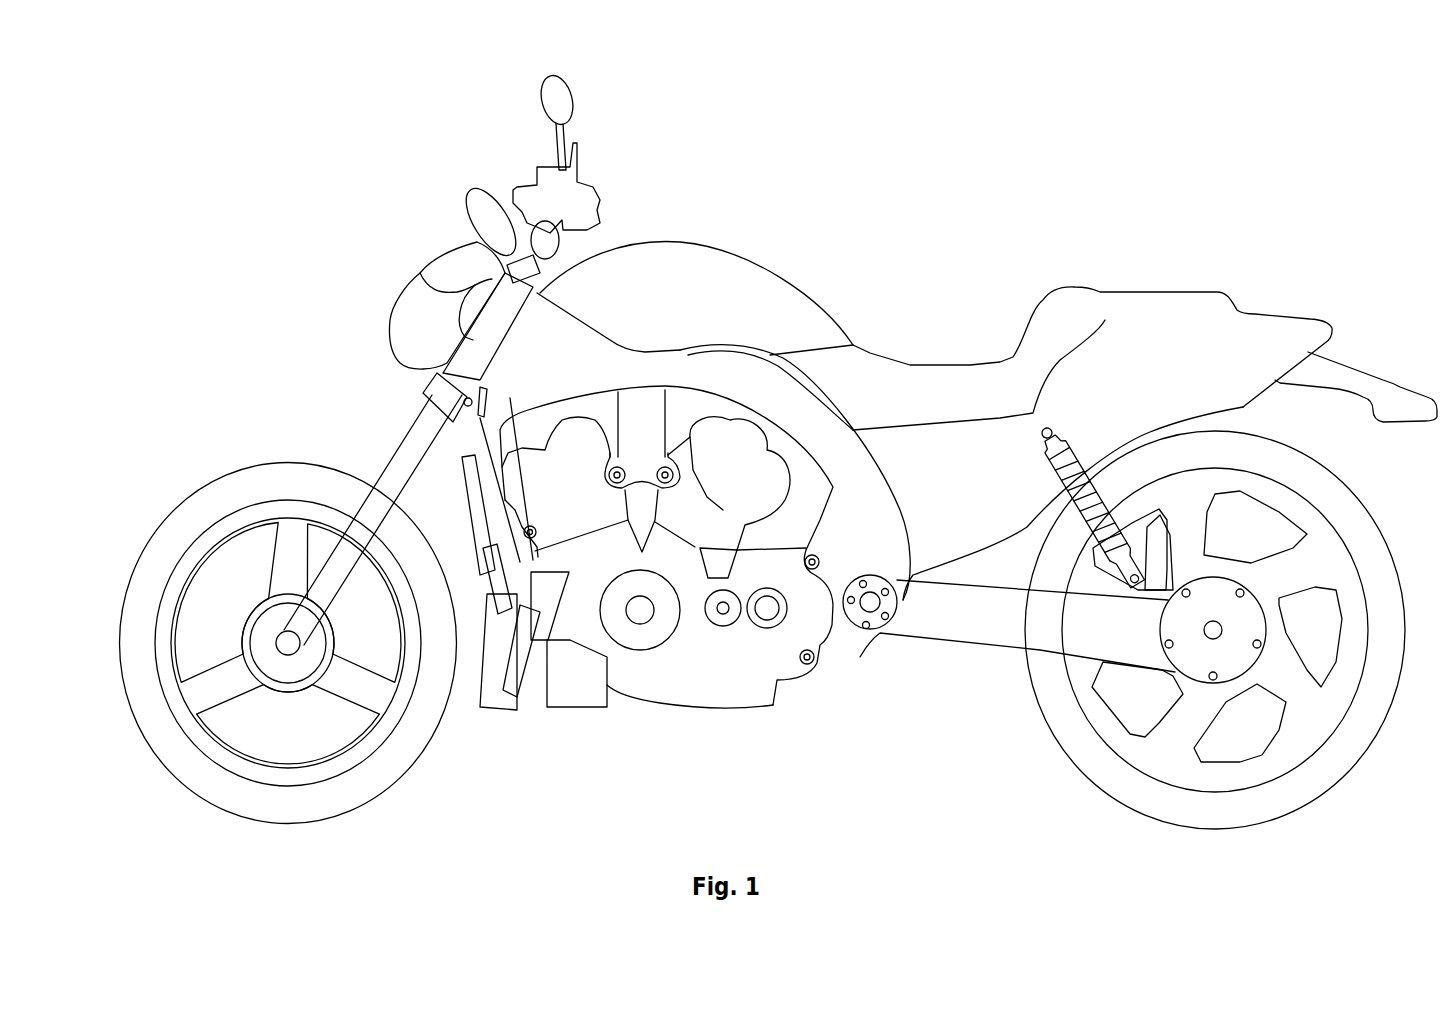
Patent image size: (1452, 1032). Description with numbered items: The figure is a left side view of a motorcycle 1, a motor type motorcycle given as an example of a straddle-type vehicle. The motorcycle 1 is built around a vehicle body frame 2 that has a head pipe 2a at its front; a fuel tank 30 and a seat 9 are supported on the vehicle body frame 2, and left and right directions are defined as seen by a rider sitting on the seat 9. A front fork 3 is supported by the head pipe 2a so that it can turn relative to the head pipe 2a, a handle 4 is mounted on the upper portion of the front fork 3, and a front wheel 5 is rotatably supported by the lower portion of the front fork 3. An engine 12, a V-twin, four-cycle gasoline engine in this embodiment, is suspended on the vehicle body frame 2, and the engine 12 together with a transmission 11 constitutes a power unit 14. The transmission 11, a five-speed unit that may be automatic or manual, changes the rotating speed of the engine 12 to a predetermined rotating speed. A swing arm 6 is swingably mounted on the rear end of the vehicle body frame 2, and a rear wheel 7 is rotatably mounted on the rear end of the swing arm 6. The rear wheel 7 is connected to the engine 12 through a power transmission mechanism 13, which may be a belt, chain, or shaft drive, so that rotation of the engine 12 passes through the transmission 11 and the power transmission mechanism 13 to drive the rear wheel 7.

The motorcycle 1 is at (877, 188).
The vehicle body frame 2 is at (652, 370).
The head pipe 2a is at (487, 327).
The front fork 3 is at (372, 508).
The handle 4 is at (530, 183).
The front wheel 5 is at (215, 497).
The swing arm 6 is at (1008, 628).
The rear wheel 7 is at (1337, 495).
The seat 9 is at (973, 362).
The transmission 11 is at (740, 650).
The engine 12 is at (573, 513).
The power transmission mechanism 13 is at (955, 657).
The power unit 14 is at (712, 706).
The fuel tank 30 is at (699, 242).